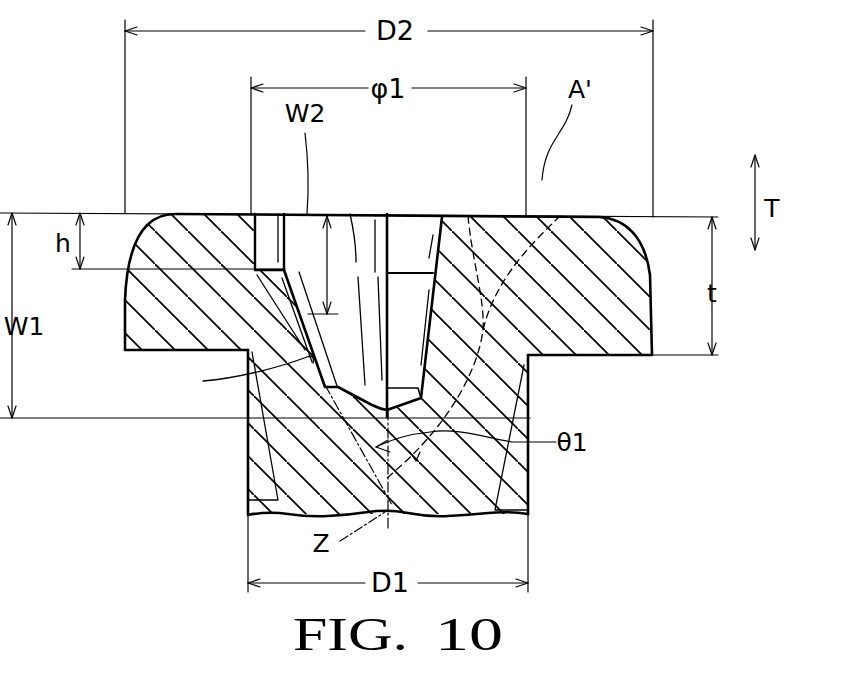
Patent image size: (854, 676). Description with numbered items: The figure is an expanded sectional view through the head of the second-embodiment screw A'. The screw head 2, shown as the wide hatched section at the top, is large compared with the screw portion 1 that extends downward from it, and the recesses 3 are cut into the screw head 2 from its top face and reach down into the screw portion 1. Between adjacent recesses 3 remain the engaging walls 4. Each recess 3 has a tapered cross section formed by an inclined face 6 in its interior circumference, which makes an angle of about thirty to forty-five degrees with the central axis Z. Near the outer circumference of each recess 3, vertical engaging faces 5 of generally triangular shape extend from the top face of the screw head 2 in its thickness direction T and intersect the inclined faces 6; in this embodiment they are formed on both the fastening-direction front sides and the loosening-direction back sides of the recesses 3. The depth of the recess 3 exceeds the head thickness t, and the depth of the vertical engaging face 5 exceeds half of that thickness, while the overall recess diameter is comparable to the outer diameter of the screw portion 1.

The screw portion 1 is at (531, 488).
The screw head 2 is at (594, 216).
The recess 3 is at (352, 214).
The engaging wall 4 is at (433, 273).
The vertical engaging face 5 is at (292, 214).
The inclined face 6 is at (560, 216).